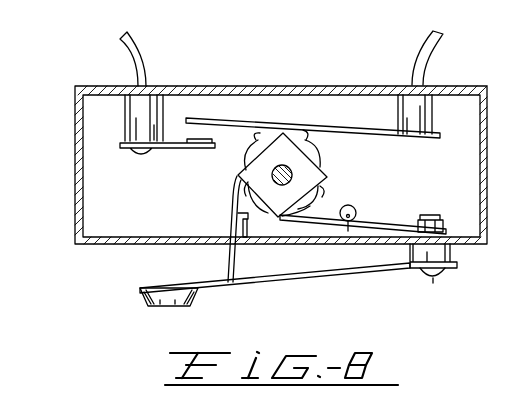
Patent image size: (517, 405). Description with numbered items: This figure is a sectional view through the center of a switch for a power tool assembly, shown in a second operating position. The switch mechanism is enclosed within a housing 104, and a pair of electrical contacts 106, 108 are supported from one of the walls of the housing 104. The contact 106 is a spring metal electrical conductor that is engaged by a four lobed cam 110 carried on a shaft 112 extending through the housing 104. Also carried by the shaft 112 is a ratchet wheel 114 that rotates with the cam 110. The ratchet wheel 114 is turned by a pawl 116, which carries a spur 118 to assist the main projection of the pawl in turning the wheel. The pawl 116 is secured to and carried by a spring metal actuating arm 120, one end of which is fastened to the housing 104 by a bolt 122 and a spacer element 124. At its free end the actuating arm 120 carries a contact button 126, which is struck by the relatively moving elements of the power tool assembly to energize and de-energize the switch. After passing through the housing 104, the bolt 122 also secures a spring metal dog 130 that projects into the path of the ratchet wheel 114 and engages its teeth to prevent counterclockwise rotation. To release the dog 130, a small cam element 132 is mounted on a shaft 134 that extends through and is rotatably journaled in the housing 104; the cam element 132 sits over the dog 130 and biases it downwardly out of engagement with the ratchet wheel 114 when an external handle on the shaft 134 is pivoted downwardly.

The housing 104 is at (77, 178).
The electrical contact 106 is at (246, 122).
The electrical contact 108 is at (178, 150).
The four lobed cam 110 is at (295, 161).
The shaft 112 is at (240, 175).
The ratchet wheel 114 is at (306, 213).
The pawl 116 is at (228, 262).
The spur 118 is at (246, 240).
The spring metal actuating arm 120 is at (276, 286).
The bolt 122 is at (437, 275).
The spacer element 124 is at (445, 250).
The contact button 126 is at (156, 310).
The spring metal dog 130 is at (377, 225).
The cam element 132 is at (358, 209).
The shaft 134 is at (347, 228).